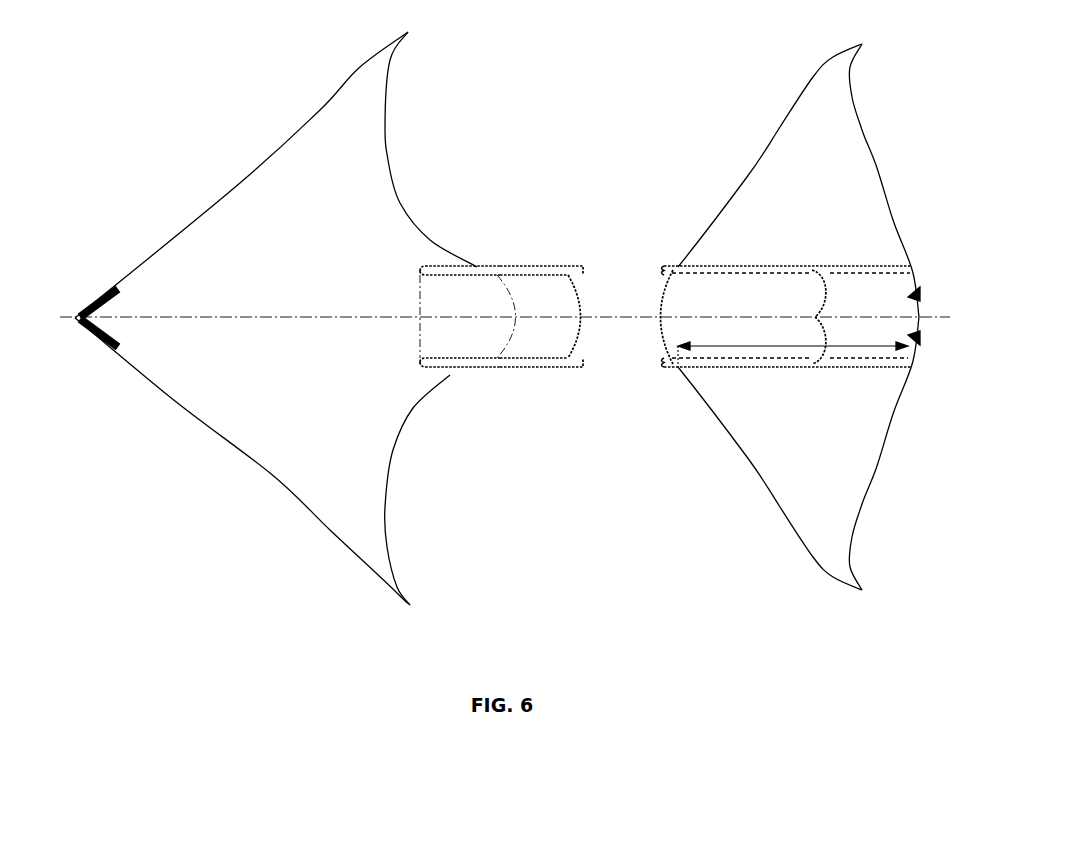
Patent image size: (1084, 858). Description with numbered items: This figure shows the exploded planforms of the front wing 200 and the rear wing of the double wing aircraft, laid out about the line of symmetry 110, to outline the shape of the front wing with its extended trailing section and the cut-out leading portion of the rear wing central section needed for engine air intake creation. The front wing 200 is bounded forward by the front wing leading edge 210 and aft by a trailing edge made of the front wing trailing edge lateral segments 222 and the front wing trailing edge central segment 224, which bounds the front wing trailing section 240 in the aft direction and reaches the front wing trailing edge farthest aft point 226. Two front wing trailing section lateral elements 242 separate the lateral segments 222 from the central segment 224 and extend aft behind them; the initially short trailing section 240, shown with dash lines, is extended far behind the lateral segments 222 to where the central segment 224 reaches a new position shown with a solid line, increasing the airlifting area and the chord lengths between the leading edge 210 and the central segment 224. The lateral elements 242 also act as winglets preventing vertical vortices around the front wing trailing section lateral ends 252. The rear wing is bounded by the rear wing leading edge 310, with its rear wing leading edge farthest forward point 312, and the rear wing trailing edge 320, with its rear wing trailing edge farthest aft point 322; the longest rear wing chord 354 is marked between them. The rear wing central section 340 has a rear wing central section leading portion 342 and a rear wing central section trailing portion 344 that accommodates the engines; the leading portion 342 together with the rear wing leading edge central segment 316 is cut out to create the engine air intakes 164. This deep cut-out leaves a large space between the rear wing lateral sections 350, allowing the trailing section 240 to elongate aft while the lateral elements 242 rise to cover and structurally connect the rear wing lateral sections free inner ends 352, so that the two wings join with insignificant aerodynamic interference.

The line of symmetry 110 is at (62, 317).
The front wing 200 is at (521, 293).
The front wing leading edge 210 is at (240, 183).
The front wing trailing edge lateral segments 222 is at (388, 157).
The front wing trailing edge central segment 224 is at (503, 357).
The front wing trailing edge farthest aft point 226 is at (590, 320).
The front wing trailing section 240 is at (545, 335).
The front wing trailing section lateral elements 242 is at (457, 272).
The front wing trailing section lateral ends 252 is at (523, 273).
The rear wing leading edge 310 is at (790, 67).
The rear wing leading edge farthest forward point 312 is at (662, 247).
The rear wing leading edge central segment 316 is at (658, 307).
The rear wing trailing edge 320 is at (877, 168).
The rear wing trailing edge farthest aft point 322 is at (915, 312).
The rear wing central section 340 is at (800, 297).
The rear wing central section leading portion 342 is at (672, 300).
The rear wing central section trailing portion 344 is at (910, 278).
The rear wing lateral sections 350 is at (808, 312).
The rear wing lateral sections free inner ends 352 is at (732, 267).
The longest rear wing chord 354 is at (793, 344).
The engine air intake 164 is at (823, 288).